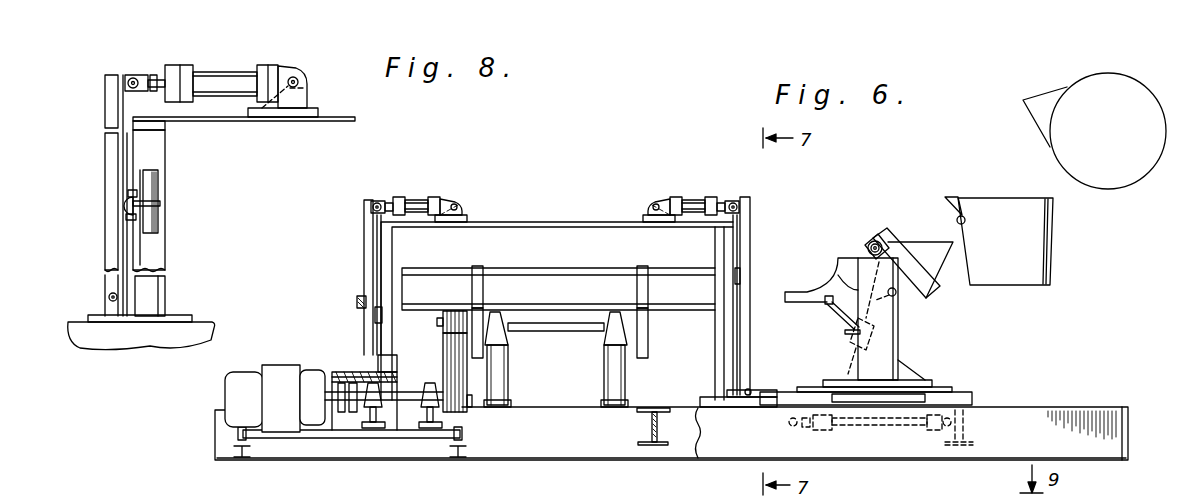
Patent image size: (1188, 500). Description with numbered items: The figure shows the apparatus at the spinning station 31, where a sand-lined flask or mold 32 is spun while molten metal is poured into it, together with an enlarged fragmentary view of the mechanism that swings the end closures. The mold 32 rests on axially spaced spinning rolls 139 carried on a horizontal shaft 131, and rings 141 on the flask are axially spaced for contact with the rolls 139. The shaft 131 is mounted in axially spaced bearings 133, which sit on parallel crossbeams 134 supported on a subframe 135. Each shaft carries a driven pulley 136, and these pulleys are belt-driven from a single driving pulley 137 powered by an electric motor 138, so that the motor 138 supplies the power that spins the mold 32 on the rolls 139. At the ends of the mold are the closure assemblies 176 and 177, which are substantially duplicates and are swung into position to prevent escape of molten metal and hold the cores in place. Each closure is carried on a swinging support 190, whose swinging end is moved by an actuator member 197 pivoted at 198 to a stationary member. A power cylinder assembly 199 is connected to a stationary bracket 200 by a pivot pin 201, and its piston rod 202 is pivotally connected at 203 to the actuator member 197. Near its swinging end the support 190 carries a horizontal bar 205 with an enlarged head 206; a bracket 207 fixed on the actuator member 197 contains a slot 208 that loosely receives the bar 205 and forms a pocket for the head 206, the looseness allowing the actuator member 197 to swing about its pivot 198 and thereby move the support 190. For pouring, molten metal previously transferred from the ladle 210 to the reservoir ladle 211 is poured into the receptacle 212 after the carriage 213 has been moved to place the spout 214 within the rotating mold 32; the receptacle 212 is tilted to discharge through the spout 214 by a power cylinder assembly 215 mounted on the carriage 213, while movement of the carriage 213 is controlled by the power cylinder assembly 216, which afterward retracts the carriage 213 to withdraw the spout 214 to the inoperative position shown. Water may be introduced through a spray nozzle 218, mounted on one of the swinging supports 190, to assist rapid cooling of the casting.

In FIG. 6, the spinning station 31 is at (560, 210).
In FIG. 6, the sand-lined flask or mold 32 is at (549, 272).
In FIG. 6, the horizontal shaft 131 is at (557, 332).
In FIG. 6, the bearing 133 is at (500, 315).
In FIG. 6, the crossbeam 134 is at (508, 380).
In FIG. 6, the subframe 135 is at (613, 448).
In FIG. 6, the driven pulley 136 is at (450, 312).
In FIG. 6, the driving pulley 137 is at (466, 412).
In FIG. 6, the electric motor 138 is at (244, 372).
In FIG. 6, the spinning roll 139 is at (470, 356).
In FIG. 6, the ring 141 is at (479, 274).
In FIG. 6, the closure assembly 176 is at (750, 273).
In FIG. 6, the closure assembly 177 is at (360, 315).
In FIG. 8, the swinging support 190 is at (160, 222).
In FIG. 8, the actuator member 197 is at (108, 100).
In FIG. 6, the actuator member 197 is at (365, 219).
In FIG. 8, the pivot 198 is at (109, 296).
In FIG. 6, the pivot 198 is at (790, 420).
In FIG. 8, the power cylinder assembly 199 is at (237, 66).
In FIG. 6, the power cylinder assembly 199 is at (417, 198).
In FIG. 8, the stationary bracket 200 is at (302, 100).
In FIG. 6, the stationary bracket 200 is at (464, 207).
In FIG. 8, the pivot pin 201 is at (302, 78).
In FIG. 6, the pivot pin 201 is at (455, 200).
In FIG. 8, the piston rod 202 is at (155, 73).
In FIG. 6, the piston rod 202 is at (389, 201).
In FIG. 8, the pivotal connection 203 is at (130, 78).
In FIG. 6, the pivotal connection 203 is at (376, 203).
In FIG. 8, the horizontal bar 205 is at (147, 202).
In FIG. 8, the enlarged head 206 is at (122, 206).
In FIG. 8, the bracket 207 is at (128, 214).
In FIG. 8, the slot 208 is at (128, 192).
In FIG. 6, the ladle 210 is at (1135, 87).
In FIG. 6, the reservoir ladle 211 is at (1033, 250).
In FIG. 6, the receptacle 212 is at (914, 245).
In FIG. 6, the carriage 213 is at (898, 360).
In FIG. 6, the pouring spout 214 is at (786, 304).
In FIG. 6, the power cylinder assembly 215 is at (872, 341).
In FIG. 6, the power cylinder assembly 216 is at (917, 427).
In FIG. 6, the spray nozzle 218 is at (356, 301).